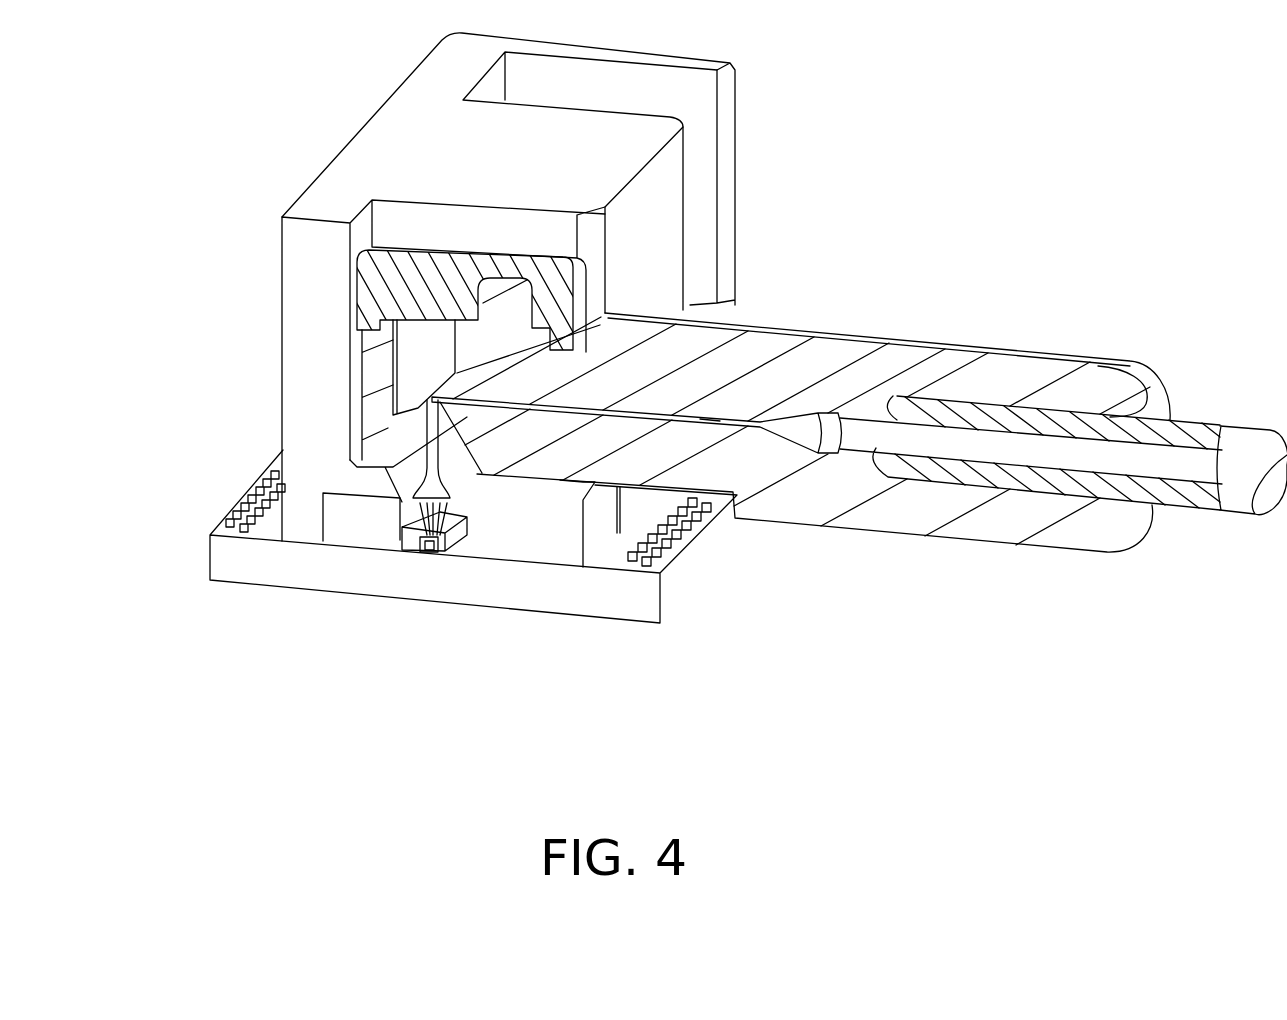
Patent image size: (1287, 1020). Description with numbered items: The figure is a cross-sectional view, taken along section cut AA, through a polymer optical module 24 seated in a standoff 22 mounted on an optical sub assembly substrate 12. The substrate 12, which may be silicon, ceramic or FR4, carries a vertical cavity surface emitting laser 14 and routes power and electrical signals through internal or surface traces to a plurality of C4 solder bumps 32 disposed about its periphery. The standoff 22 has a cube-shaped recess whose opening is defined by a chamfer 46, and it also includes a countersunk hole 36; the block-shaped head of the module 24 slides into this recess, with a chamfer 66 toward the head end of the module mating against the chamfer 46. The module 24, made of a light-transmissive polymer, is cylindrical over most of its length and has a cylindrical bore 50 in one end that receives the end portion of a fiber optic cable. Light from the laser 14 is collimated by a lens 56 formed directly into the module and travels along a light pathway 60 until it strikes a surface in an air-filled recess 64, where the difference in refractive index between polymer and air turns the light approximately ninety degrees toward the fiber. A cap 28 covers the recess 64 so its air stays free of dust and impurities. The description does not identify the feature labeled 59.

The optical sub assembly substrate 12 is at (597, 605).
The vertical cavity surface emitting laser 14 is at (438, 557).
The standoff 22 is at (318, 260).
The polymer optical module 24 is at (972, 541).
The cap 28 is at (400, 289).
The C4 solder bumps 32 is at (690, 518).
The countersunk hole 36 is at (275, 604).
The chamfer 46 is at (649, 312).
The cylindrical bore 50 is at (968, 408).
The lens 56 is at (417, 540).
The opening 59 is at (400, 497).
The light pathway 60 is at (708, 425).
The recess 64 is at (420, 367).
The chamfer 66 is at (597, 312).